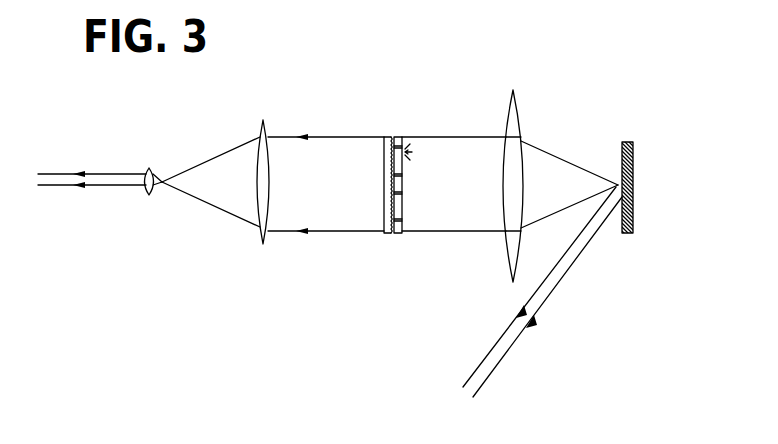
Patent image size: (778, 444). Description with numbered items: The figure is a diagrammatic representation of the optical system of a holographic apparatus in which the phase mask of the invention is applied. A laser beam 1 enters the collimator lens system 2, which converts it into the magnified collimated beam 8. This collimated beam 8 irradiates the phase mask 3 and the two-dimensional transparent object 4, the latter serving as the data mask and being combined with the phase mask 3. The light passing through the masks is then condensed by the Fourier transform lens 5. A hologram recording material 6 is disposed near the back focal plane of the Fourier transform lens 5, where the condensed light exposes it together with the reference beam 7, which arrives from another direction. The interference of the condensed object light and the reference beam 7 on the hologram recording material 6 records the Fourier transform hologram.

The laser beam 1 is at (102, 175).
The collimator lens system 2 is at (147, 110).
The phase mask 3 is at (383, 163).
The two-dimensional transparent object 4 is at (405, 142).
The Fourier transform lens 5 is at (508, 112).
The hologram recording material 6 is at (635, 155).
The reference beam 7 is at (562, 282).
The magnified collimated beam 8 is at (333, 136).